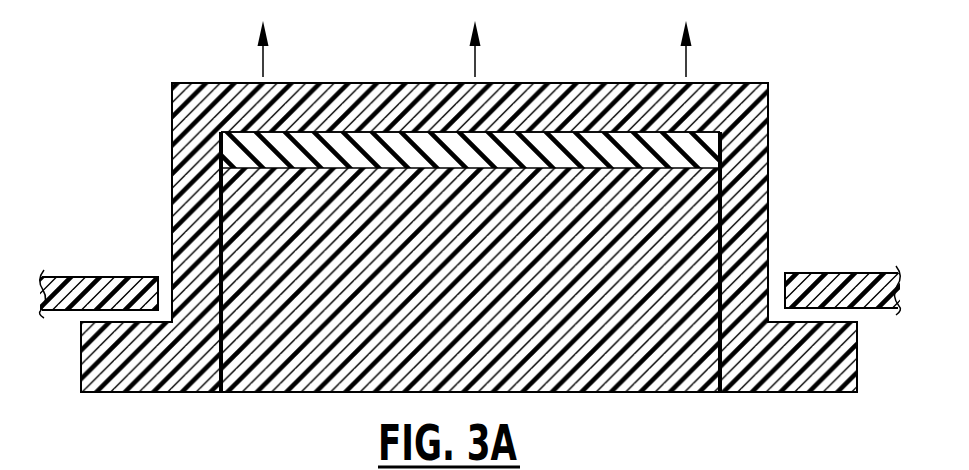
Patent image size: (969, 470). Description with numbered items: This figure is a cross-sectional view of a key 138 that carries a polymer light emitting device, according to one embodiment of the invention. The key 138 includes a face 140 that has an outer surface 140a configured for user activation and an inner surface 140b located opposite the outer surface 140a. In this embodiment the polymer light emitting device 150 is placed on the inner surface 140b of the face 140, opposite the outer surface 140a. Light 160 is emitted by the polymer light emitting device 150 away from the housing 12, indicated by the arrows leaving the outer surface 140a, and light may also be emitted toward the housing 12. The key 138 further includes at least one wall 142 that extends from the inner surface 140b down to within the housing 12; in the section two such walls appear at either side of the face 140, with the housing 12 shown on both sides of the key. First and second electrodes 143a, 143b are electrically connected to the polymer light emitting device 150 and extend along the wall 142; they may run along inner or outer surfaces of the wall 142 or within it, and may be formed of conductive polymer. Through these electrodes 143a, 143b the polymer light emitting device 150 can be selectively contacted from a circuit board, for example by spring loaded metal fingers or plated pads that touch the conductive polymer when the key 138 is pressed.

The housing 12 is at (112, 306).
The key 138 is at (792, 46).
The face 140 is at (410, 123).
The outer surface 140a is at (321, 78).
The inner surface 140b is at (326, 141).
The wall 142 is at (190, 226).
The first electrode 143a is at (223, 290).
The second electrode 143b is at (717, 285).
The polymer light emitting device 150 is at (448, 164).
The light 160 is at (482, 31).